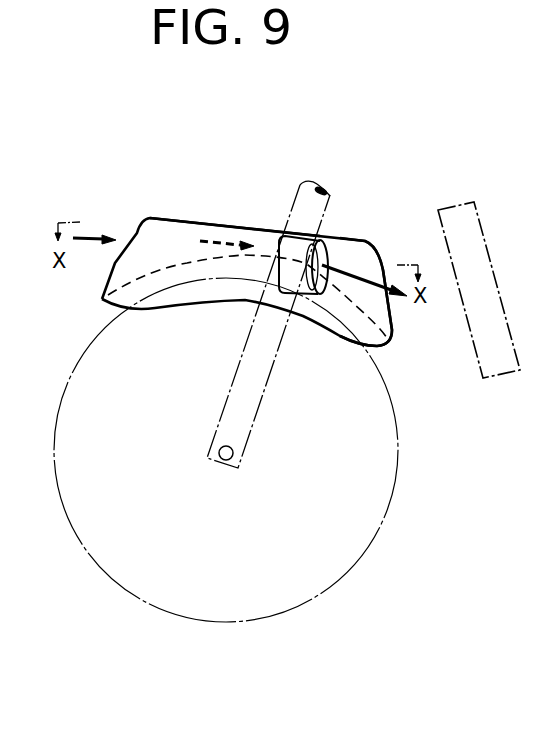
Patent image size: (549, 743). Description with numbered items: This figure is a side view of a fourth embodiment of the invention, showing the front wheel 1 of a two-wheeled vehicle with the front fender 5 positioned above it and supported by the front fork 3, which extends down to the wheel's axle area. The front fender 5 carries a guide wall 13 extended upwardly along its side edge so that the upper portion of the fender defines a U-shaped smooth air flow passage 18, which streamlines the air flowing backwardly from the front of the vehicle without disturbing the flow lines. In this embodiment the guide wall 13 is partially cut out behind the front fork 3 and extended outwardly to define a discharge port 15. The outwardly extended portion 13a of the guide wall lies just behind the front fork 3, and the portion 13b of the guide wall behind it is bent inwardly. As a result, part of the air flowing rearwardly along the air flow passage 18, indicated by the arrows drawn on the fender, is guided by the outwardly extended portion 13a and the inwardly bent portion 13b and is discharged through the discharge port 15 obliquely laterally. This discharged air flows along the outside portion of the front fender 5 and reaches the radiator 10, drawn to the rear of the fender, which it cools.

The front wheel 1 is at (397, 483).
The front fork 3 is at (263, 395).
The front fender 5 is at (168, 302).
The radiator 10 is at (445, 203).
The guide wall 13 is at (260, 263).
The outwardly extended portion 13a is at (292, 248).
The inwardly bent portion 13b is at (342, 260).
The discharge port 15 is at (340, 258).
The air flow passage 18 is at (173, 260).